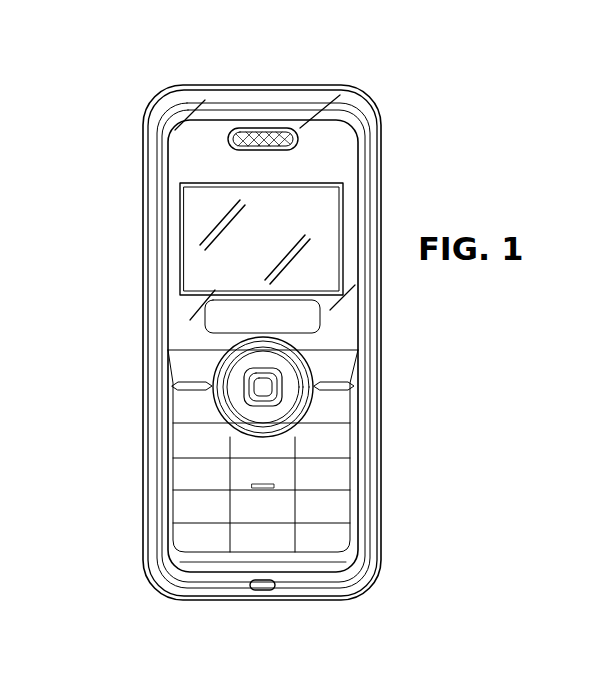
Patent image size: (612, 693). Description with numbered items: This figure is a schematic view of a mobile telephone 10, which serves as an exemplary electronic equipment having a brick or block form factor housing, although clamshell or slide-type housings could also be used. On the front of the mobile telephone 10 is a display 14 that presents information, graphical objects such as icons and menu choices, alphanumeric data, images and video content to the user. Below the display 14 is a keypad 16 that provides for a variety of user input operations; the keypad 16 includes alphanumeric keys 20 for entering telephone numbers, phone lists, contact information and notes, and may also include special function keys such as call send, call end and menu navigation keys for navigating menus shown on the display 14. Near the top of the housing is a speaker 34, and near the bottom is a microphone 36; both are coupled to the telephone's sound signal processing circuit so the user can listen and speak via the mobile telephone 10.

The mobile telephone 10 is at (100, 104).
The display 14 is at (200, 257).
The keypad 16 is at (141, 511).
The alphanumeric keys 20 is at (242, 405).
The speaker 34 is at (247, 128).
The microphone 36 is at (262, 590).